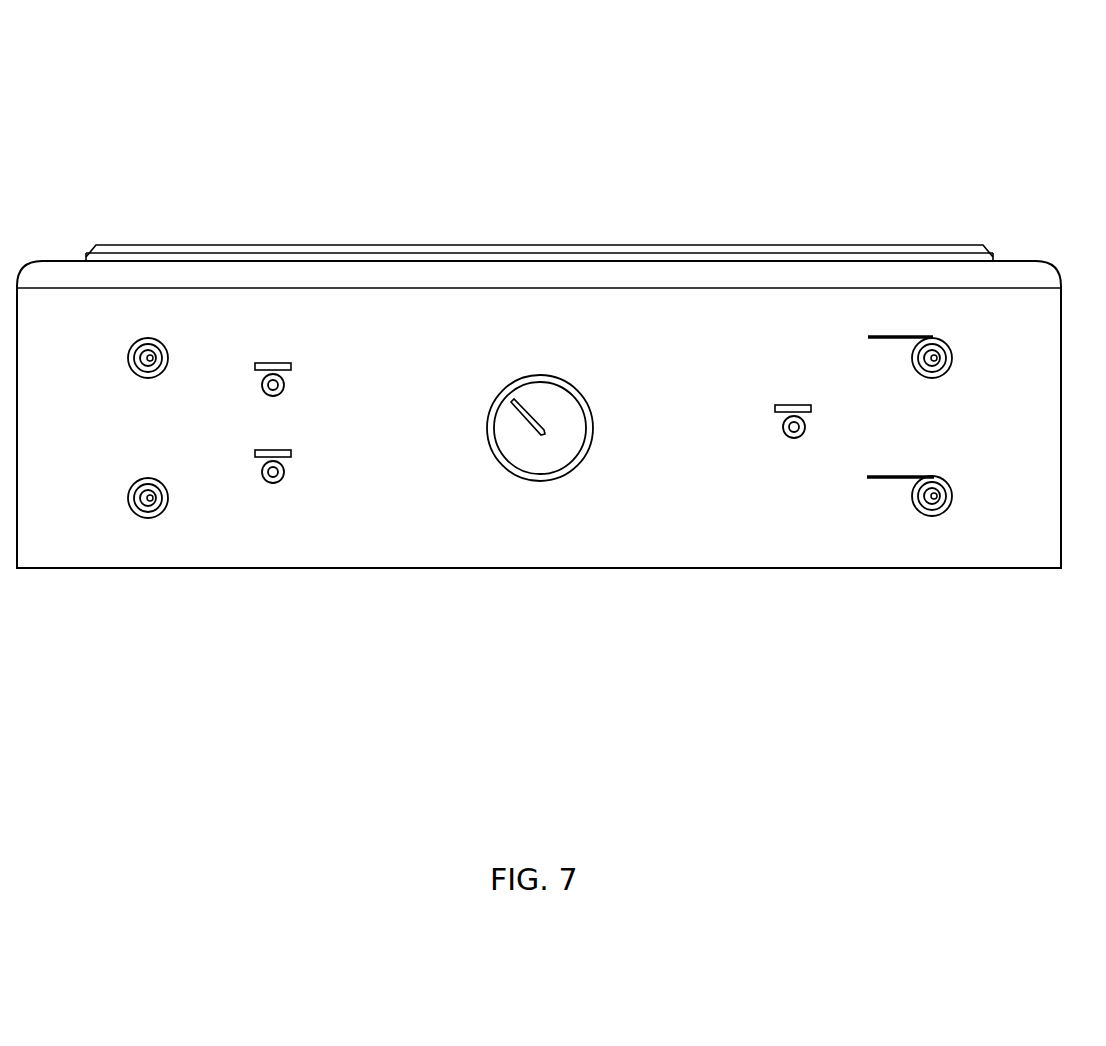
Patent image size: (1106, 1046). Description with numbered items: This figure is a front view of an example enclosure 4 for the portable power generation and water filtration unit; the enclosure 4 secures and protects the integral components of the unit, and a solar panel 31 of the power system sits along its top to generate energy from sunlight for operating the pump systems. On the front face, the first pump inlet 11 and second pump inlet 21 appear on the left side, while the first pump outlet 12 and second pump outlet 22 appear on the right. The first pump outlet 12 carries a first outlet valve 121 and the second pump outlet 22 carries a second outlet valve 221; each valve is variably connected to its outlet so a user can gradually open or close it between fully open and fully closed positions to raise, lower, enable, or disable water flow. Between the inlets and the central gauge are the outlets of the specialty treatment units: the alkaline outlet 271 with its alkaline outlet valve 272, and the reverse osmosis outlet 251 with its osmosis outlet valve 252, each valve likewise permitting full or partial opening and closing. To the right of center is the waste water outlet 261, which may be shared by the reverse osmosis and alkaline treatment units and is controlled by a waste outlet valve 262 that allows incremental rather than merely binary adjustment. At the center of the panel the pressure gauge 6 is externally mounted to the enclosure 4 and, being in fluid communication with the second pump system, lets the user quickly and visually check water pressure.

The enclosure 4 is at (954, 54).
The solar panel 31 is at (520, 250).
The pressure gauge 6 is at (531, 403).
The first pump inlet 11 is at (146, 361).
The second pump inlet 21 is at (146, 496).
The first pump outlet 12 is at (932, 358).
The second pump outlet 22 is at (930, 496).
The first outlet valve 121 is at (870, 336).
The second outlet valve 221 is at (904, 476).
The alkaline outlet 271 is at (284, 383).
The alkaline outlet valve 272 is at (273, 368).
The reverse osmosis outlet 251 is at (273, 480).
The osmosis outlet valve 252 is at (258, 452).
The waste water outlet 261 is at (792, 432).
The waste outlet valve 262 is at (776, 408).